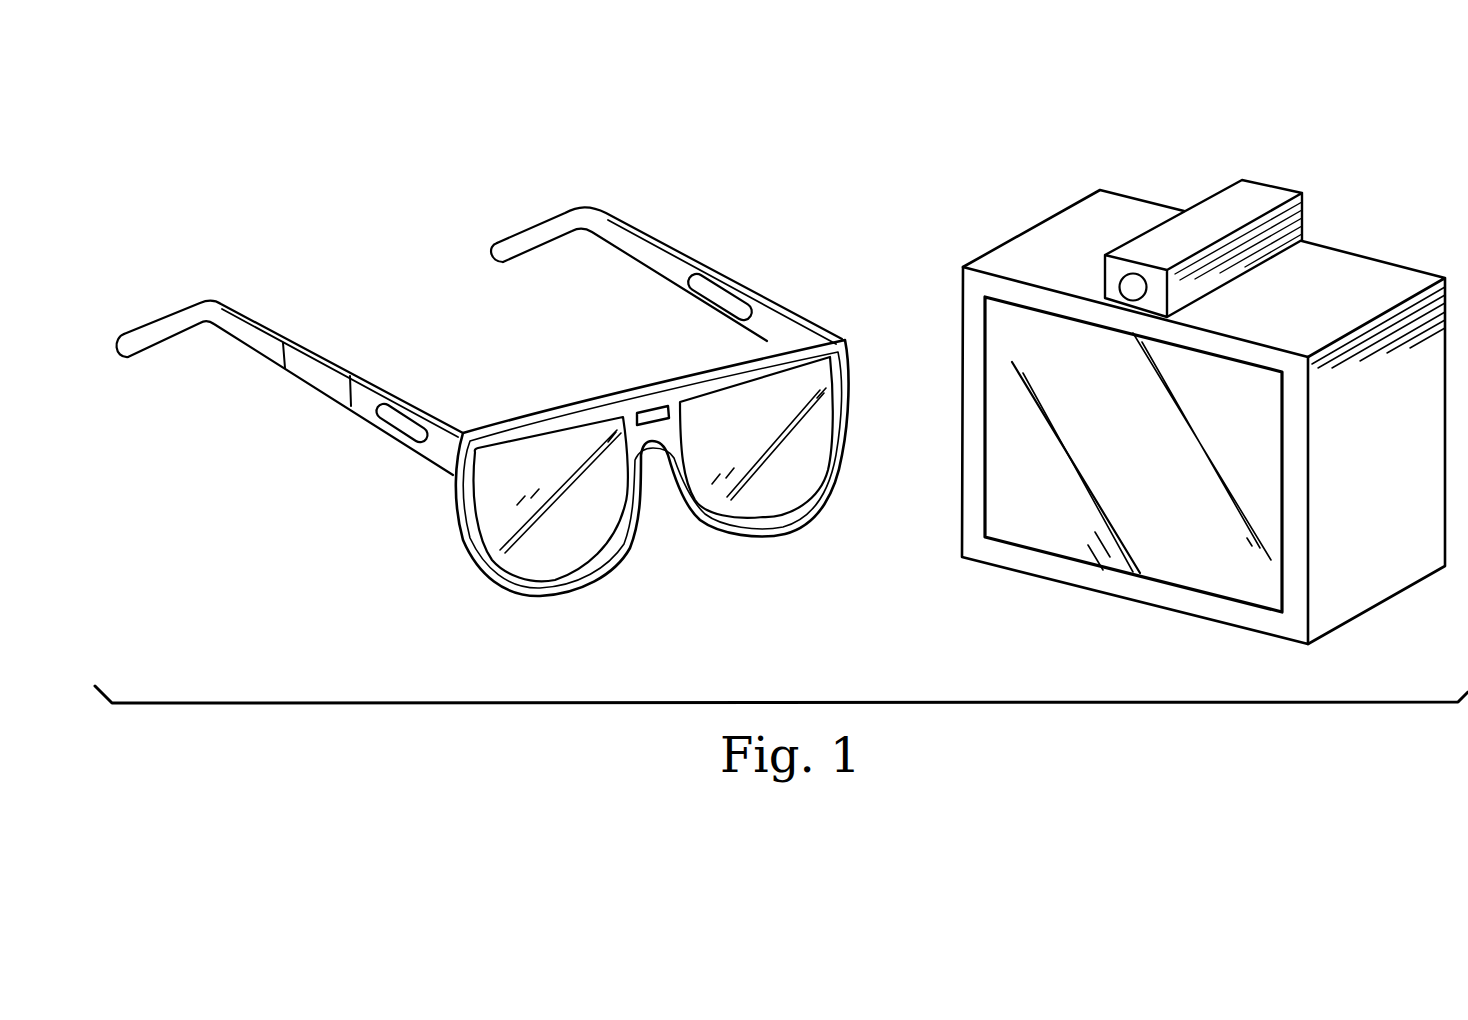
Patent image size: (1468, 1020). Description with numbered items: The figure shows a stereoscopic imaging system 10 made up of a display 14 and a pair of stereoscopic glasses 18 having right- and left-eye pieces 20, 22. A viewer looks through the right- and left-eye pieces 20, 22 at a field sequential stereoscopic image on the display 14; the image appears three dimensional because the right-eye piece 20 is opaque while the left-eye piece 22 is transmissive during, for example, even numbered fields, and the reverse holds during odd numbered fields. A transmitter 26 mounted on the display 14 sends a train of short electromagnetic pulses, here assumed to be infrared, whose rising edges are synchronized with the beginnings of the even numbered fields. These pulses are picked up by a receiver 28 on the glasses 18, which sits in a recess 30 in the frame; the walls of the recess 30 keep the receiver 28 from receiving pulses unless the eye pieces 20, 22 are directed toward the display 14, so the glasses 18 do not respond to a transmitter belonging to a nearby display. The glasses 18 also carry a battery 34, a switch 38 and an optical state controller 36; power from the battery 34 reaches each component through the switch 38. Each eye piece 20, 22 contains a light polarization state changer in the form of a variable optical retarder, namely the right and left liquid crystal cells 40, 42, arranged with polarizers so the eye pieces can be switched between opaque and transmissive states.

The stereoscopic imaging system 10 is at (936, 196).
The display 14 is at (1013, 445).
The stereoscopic glasses 18 is at (819, 308).
The right-eye piece 20 is at (475, 533).
The left-eye piece 22 is at (846, 414).
The transmitter 26 is at (1118, 285).
The receiver 28 is at (657, 418).
The recess 30 is at (647, 403).
The battery 34 is at (723, 298).
The optical state controller 36 is at (312, 377).
The switch 38 is at (393, 425).
The right liquid crystal cell 40 is at (520, 555).
The left liquid crystal cell 42 is at (793, 473).